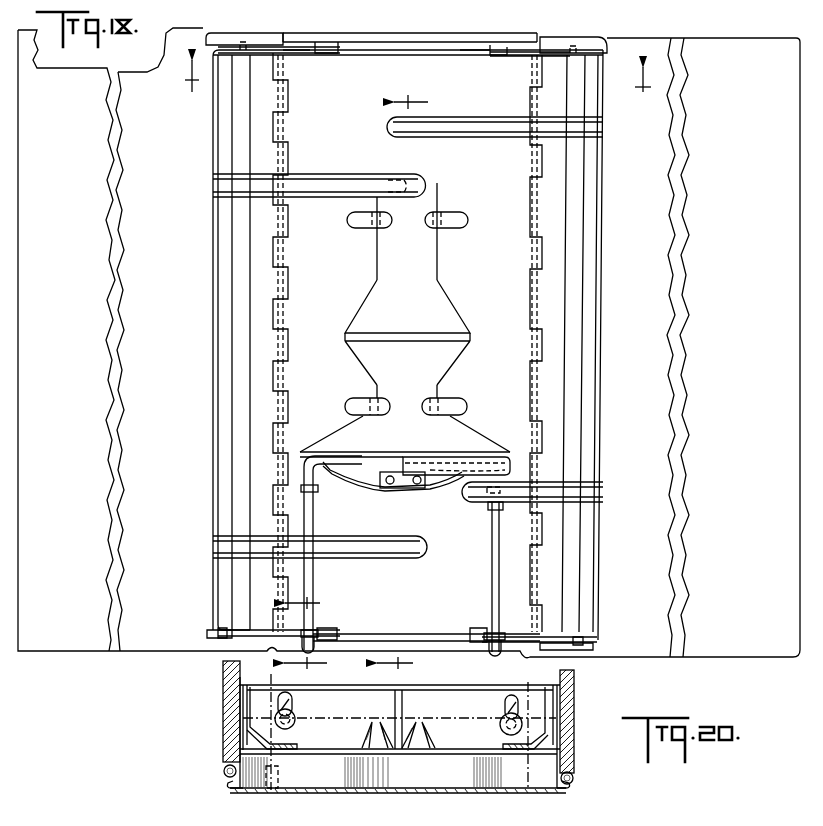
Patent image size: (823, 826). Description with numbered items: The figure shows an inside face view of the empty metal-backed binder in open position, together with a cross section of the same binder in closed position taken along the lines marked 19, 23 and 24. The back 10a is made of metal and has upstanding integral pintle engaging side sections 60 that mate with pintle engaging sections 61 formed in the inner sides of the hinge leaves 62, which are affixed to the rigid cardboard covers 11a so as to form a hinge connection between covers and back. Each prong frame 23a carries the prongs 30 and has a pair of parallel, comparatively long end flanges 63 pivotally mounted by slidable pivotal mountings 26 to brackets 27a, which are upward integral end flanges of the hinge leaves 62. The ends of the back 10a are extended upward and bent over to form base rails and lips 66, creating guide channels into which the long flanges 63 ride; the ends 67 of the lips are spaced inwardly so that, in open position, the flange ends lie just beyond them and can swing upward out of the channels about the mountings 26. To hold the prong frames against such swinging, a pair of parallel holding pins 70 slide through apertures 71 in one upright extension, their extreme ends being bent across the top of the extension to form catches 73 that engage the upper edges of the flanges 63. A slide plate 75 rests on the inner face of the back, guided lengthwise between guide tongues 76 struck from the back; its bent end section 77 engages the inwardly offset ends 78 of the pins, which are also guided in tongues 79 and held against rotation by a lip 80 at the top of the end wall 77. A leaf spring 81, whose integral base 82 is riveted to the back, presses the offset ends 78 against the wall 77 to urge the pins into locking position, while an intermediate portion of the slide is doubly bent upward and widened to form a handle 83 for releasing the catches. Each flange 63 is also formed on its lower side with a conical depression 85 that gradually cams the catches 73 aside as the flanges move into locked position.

In FIG. 18, the back 10a is at (500, 352).
In FIG. 20, the back 10a is at (473, 794).
In FIG. 18, the covers 11a is at (126, 645).
In FIG. 20, the covers 11a is at (225, 725).
In FIG. 18, the section line 19 is at (409, 87).
In FIG. 18, the section line 23 is at (413, 95).
In FIG. 20, the section line 23 is at (406, 666).
In FIG. 18, the prong frames 23a is at (212, 326).
In FIG. 20, the prong frames 23a is at (223, 687).
In FIG. 18, the section line 24 is at (310, 598).
In FIG. 20, the section line 24 is at (315, 666).
In FIG. 18, the slidable pivotal mountings 26 is at (243, 42).
In FIG. 20, the slidable pivotal mountings 26 is at (296, 719).
In FIG. 18, the brackets 27a is at (210, 34).
In FIG. 20, the brackets 27a is at (258, 712).
In FIG. 18, the prongs 30 is at (323, 181).
In FIG. 18, the pintle engaging side sections 60 is at (274, 448).
In FIG. 20, the pintle engaging side sections 60 is at (247, 789).
In FIG. 18, the pintle engaging sections 61 is at (288, 333).
In FIG. 20, the pintle engaging sections 61 is at (224, 771).
In FIG. 18, the hinge leaves 62 is at (253, 390).
In FIG. 20, the hinge leaves 62 is at (237, 741).
In FIG. 18, the end flanges 63 is at (265, 55).
In FIG. 20, the end flanges 63 is at (420, 700).
In FIG. 18, the lips 66 is at (402, 42).
In FIG. 20, the lips 66 is at (458, 690).
In FIG. 18, the ends of the lips 67 is at (335, 54).
In FIG. 20, the ends of the lips 67 is at (303, 683).
In FIG. 18, the holding pins 70 is at (313, 523).
In FIG. 20, the holding pins 70 is at (309, 824).
In FIG. 20, the apertures 71 is at (281, 775).
In FIG. 18, the catches 73 is at (315, 631).
In FIG. 18, the slide plate 75 is at (433, 250).
In FIG. 18, the guide tongues 76 is at (430, 224).
In FIG. 18, the end section of the slide plate 77 is at (377, 452).
In FIG. 18, the inwardly offset ends 78 is at (335, 450).
In FIG. 18, the tongues 79 is at (318, 489).
In FIG. 18, the lip 80 is at (510, 462).
In FIG. 18, the leaf spring 81 is at (372, 488).
In FIG. 18, the base 82 is at (403, 488).
In FIG. 18, the handle 83 is at (405, 333).
In FIG. 20, the conical depression 85 is at (370, 726).